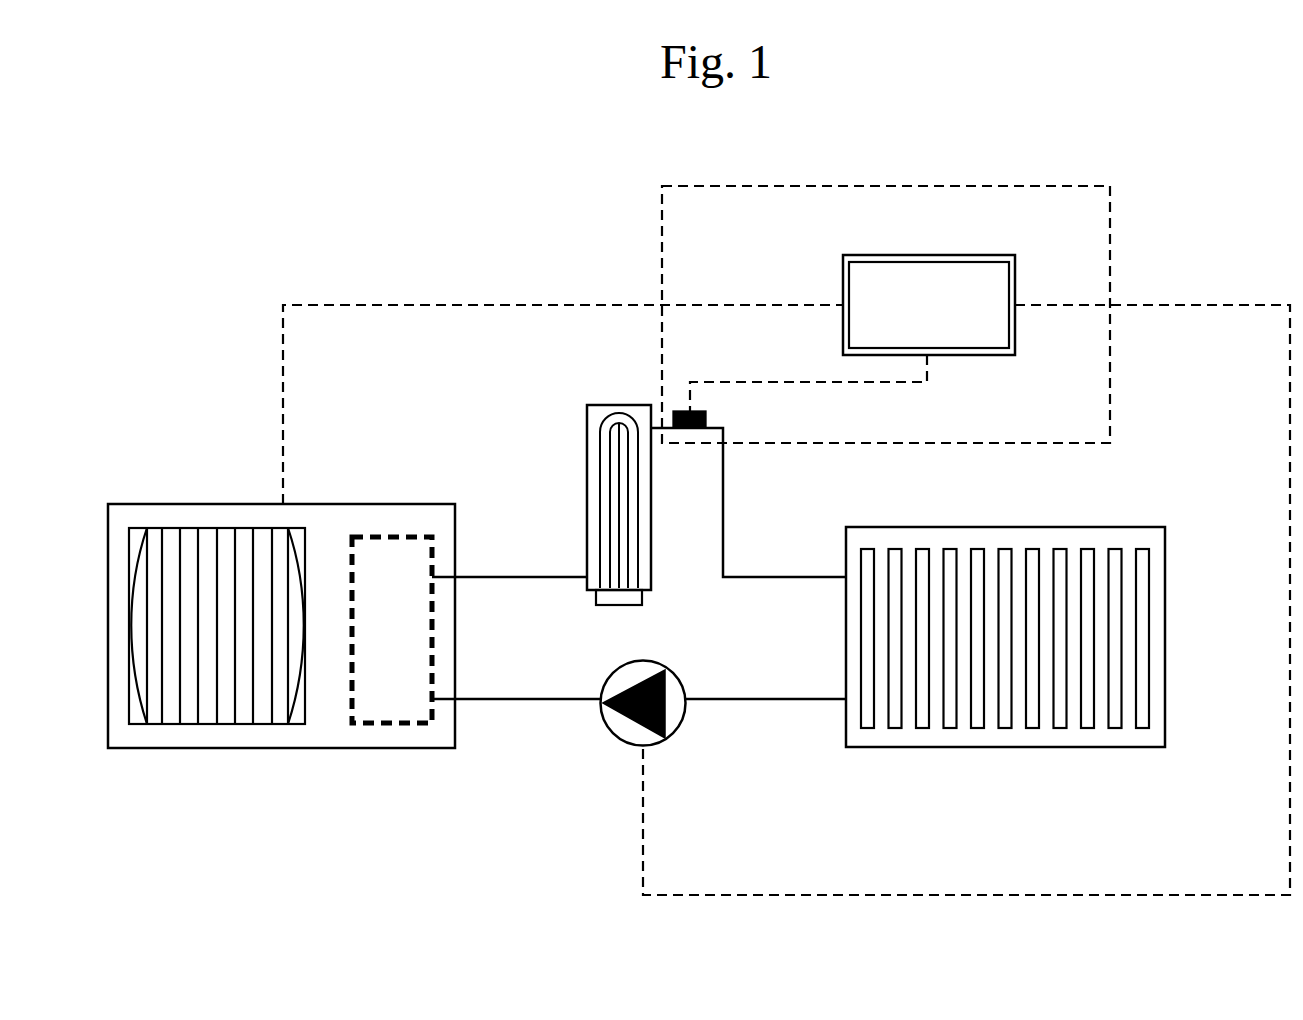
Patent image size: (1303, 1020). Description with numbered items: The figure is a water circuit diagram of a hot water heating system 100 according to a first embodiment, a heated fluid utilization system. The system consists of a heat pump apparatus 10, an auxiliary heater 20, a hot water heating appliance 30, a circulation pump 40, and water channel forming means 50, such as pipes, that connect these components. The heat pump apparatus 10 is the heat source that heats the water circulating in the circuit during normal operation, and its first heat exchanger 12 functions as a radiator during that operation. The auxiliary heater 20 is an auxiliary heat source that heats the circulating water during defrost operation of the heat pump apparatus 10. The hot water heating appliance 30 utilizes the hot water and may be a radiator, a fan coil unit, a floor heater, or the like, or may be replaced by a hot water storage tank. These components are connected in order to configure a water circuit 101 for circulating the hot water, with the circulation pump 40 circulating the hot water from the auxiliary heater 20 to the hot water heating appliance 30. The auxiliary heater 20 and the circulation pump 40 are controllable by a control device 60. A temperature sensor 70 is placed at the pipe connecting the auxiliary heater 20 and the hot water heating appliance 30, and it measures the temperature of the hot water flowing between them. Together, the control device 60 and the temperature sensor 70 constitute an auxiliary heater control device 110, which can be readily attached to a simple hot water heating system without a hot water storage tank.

The hot water heating system 100 is at (1152, 159).
The auxiliary heater control device 110 is at (1110, 289).
The heat pump apparatus 10 is at (338, 503).
The first heat exchanger 12 is at (427, 638).
The auxiliary heater 20 is at (602, 405).
The hot water heating appliance 30 is at (1088, 527).
The circulation pump 40 is at (627, 743).
The water channel forming means 50 is at (488, 699).
The control device 60 is at (987, 254).
The temperature sensor 70 is at (706, 418).
The water circuit 101 is at (480, 572).